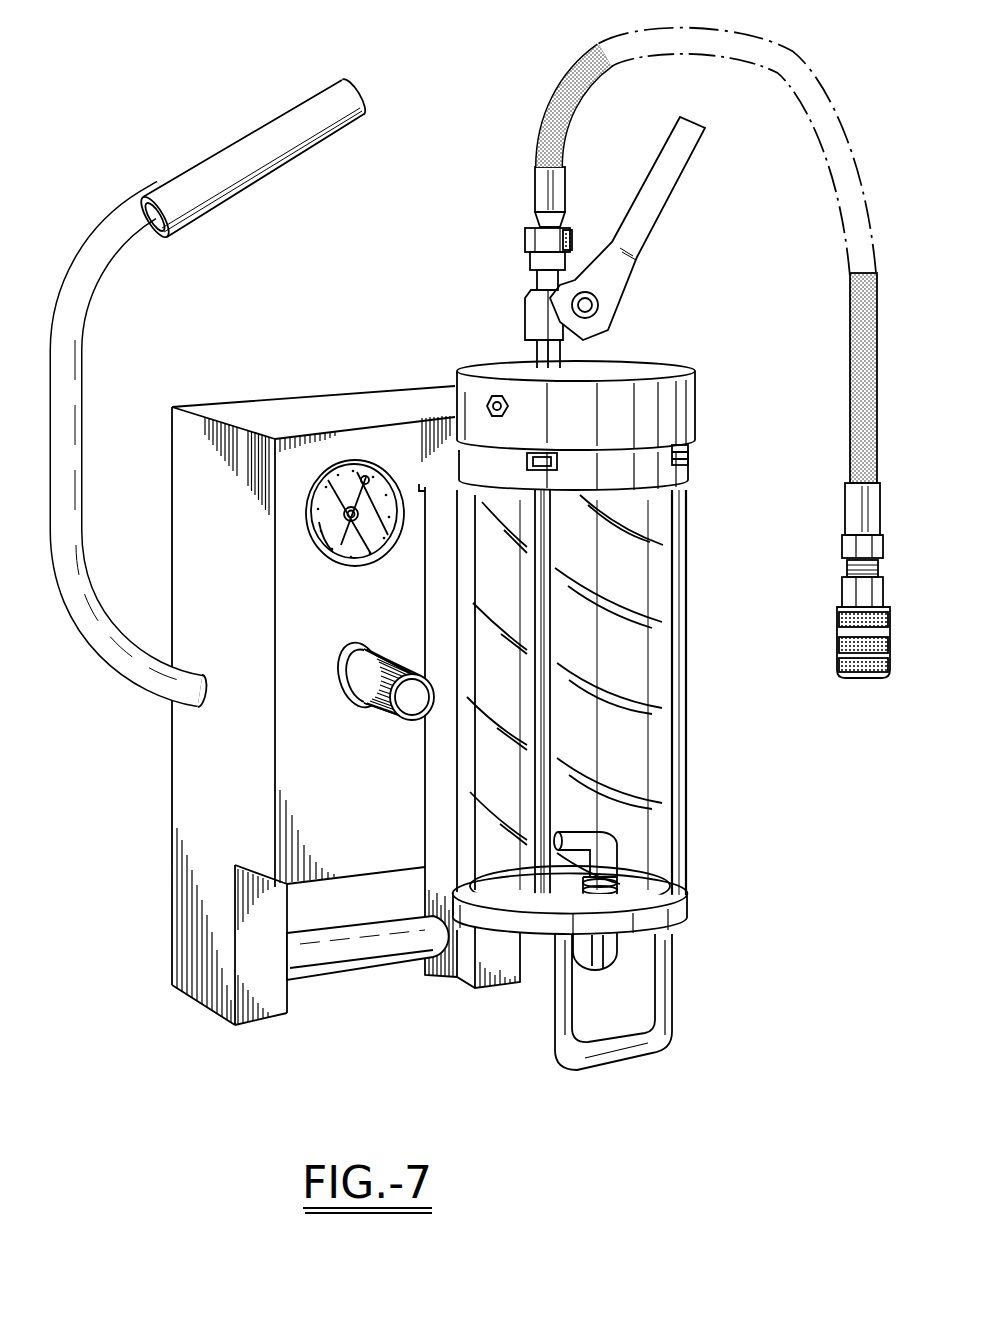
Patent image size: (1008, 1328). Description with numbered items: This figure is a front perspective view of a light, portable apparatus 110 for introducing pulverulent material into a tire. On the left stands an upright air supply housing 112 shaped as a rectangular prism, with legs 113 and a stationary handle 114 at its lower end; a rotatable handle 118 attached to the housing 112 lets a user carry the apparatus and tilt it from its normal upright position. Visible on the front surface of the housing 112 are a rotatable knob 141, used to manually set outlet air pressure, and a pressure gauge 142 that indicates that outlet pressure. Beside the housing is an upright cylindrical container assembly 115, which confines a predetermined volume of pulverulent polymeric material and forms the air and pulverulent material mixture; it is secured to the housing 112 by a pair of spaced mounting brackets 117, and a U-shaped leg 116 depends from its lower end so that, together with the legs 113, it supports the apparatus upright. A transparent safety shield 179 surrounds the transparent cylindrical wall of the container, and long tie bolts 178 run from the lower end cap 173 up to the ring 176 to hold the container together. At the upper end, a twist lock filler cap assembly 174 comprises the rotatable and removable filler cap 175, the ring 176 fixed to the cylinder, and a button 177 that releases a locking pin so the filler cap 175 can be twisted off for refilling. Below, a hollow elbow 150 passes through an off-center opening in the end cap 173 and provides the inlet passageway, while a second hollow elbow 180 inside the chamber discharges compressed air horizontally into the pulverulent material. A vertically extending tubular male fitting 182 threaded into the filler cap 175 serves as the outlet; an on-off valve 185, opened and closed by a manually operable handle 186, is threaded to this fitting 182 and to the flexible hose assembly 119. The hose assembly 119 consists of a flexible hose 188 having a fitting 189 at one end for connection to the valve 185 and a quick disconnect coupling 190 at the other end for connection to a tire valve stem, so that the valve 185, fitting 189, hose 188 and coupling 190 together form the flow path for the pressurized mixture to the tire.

The apparatus 110 is at (380, 356).
The air supply housing 112 is at (238, 392).
The legs 113 is at (180, 935).
The stationary handle 114 is at (362, 968).
The container assembly 115 is at (702, 550).
The U-shaped leg 116 is at (672, 1000).
The mounting brackets 117 is at (488, 843).
The rotatable handle 118 is at (258, 178).
The flexible hose assembly 119 is at (838, 316).
The rotatable knob 141 is at (358, 700).
The pressure gauge 142 is at (313, 522).
The hollow elbow 150 is at (613, 955).
The end cap 173 is at (686, 905).
The twist lock filler cap assembly 174 is at (712, 437).
The filler cap 175 is at (697, 402).
The ring 176 is at (690, 468).
The button 177 is at (487, 404).
The tie bolts 178 is at (688, 707).
The transparent safety shield 179 is at (488, 772).
The second hollow elbow 180 is at (606, 844).
The tubular male fitting 182 is at (538, 352).
The on-off valve 185 is at (531, 312).
The manually operable handle 186 is at (663, 210).
The flexible hose 188 is at (857, 380).
The fitting 189 is at (538, 188).
The quick disconnect coupling 190 is at (838, 646).